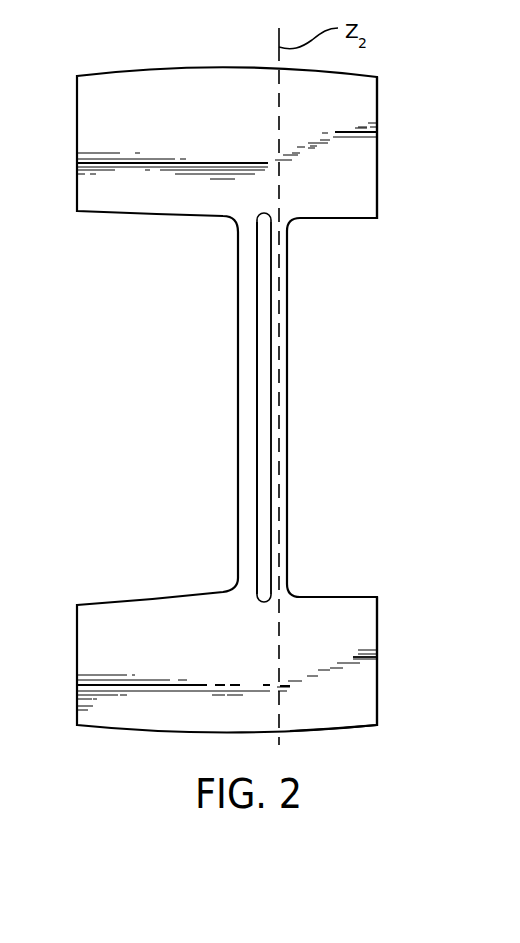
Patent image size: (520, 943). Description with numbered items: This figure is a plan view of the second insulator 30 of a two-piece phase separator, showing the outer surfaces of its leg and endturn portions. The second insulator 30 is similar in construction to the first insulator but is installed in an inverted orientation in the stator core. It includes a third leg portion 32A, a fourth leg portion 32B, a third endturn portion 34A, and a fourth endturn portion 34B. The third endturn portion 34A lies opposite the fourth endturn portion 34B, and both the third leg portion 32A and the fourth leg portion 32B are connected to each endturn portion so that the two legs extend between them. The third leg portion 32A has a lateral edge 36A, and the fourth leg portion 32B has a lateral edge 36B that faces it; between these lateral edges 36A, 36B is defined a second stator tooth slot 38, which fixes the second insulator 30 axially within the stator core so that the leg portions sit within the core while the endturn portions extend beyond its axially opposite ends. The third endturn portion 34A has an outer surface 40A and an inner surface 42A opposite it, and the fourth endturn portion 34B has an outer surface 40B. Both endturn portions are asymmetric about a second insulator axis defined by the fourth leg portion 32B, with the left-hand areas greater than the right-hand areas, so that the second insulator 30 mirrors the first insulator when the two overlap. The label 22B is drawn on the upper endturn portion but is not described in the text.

The second insulator 30 is at (413, 710).
The second end portion 22B is at (352, 100).
The inner surface 42A is at (352, 622).
The third endturn portion 34A is at (180, 670).
The fourth endturn portion 34B is at (190, 137).
The outer surface 40A is at (352, 705).
The outer surface 40B is at (352, 197).
The third leg portion 32A is at (252, 300).
The fourth leg portion 32B is at (280, 342).
The lateral edge 36A is at (257, 492).
The lateral edge 36B is at (270, 375).
The second stator tooth slot 38 is at (263, 432).